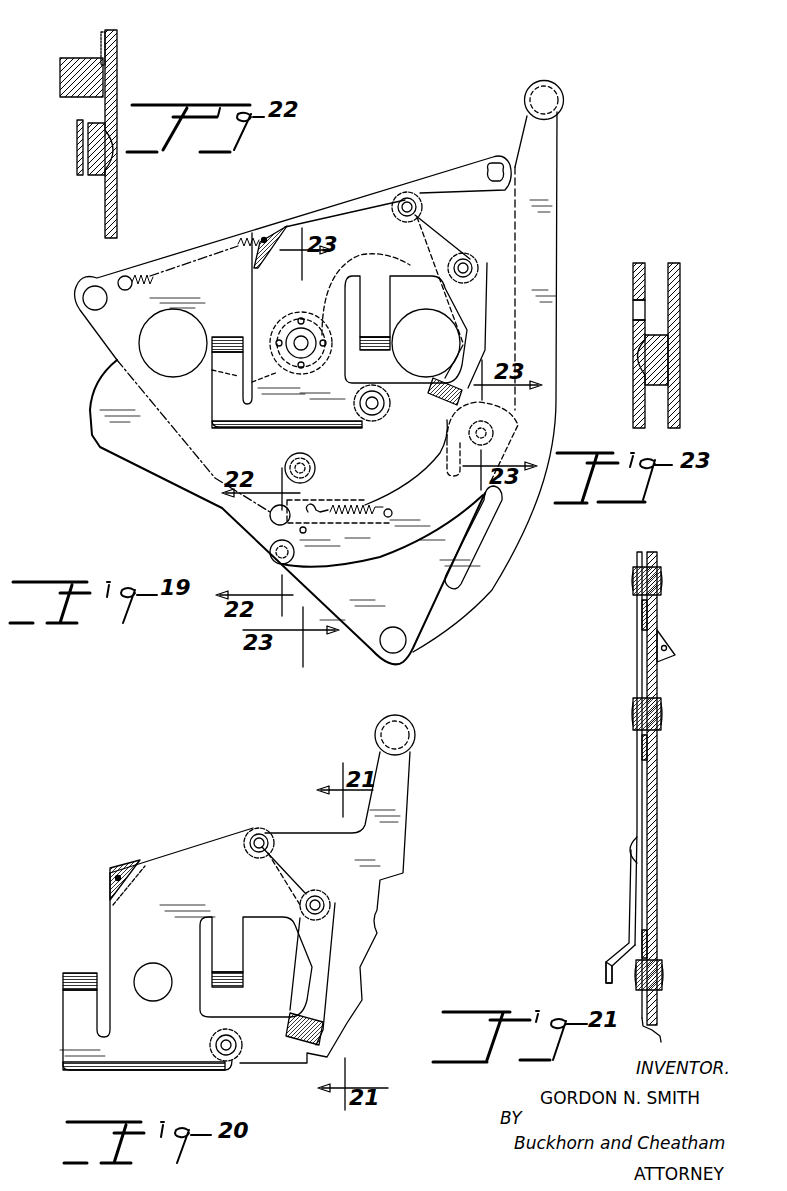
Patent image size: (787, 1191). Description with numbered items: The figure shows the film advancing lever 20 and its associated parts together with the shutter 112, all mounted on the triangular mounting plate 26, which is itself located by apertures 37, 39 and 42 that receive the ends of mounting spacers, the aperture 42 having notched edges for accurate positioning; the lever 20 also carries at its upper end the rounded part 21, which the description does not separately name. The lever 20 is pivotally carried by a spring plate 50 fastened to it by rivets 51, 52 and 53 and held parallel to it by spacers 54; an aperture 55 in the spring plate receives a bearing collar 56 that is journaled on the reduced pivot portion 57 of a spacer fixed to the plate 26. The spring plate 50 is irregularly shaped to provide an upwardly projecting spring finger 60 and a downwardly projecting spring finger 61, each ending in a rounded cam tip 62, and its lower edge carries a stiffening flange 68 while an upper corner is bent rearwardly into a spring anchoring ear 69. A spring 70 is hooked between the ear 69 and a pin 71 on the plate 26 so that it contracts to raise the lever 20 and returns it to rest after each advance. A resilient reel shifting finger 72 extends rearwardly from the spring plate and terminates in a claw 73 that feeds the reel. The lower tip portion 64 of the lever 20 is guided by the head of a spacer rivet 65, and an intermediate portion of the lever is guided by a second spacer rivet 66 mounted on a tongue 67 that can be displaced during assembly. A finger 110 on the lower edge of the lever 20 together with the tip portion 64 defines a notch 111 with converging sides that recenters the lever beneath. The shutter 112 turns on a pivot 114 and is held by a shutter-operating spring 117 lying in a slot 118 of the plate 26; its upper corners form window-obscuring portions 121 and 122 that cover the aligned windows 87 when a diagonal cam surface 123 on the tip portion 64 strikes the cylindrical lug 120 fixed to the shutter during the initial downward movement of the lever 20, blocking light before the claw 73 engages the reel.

In FIG. 19, the film advancing lever 20 is at (540, 252).
In FIG. 20, the film advancing lever 20 is at (400, 795).
In FIG. 21, the film advancing lever 20 is at (658, 815).
In FIG. 23, the film advancing lever 20 is at (678, 298).
In FIG. 19, the roller pin 21 is at (557, 86).
In FIG. 20, the roller pin 21 is at (406, 722).
In FIG. 19, the triangular mounting plate 26 is at (420, 185).
In FIG. 22, the triangular mounting plate 26 is at (120, 58).
In FIG. 23, the triangular mounting plate 26 is at (641, 266).
In FIG. 19, the aperture 37 is at (90, 304).
In FIG. 19, the aperture 39 is at (405, 648).
In FIG. 19, the aperture 42 is at (495, 165).
In FIG. 19, the spring plate 50 is at (350, 217).
In FIG. 20, the spring plate 50 is at (170, 855).
In FIG. 21, the spring plate 50 is at (637, 667).
In FIG. 19, the rivet 51 is at (404, 212).
In FIG. 20, the rivet 51 is at (262, 840).
In FIG. 21, the rivet 51 is at (662, 579).
In FIG. 19, the rivet 52 is at (468, 258).
In FIG. 20, the rivet 52 is at (318, 900).
In FIG. 21, the rivet 52 is at (662, 714).
In FIG. 19, the rivet 53 is at (380, 402).
In FIG. 20, the rivet 53 is at (228, 1052).
In FIG. 21, the rivet 53 is at (663, 976).
In FIG. 21, the spacers 54 is at (645, 556).
In FIG. 20, the aperture 55 is at (156, 974).
In FIG. 19, the bearing collar 56 is at (298, 332).
In FIG. 19, the reduced pivot portion 57 is at (292, 338).
In FIG. 19, the spring finger 60 is at (222, 400).
In FIG. 20, the spring finger 60 is at (73, 1010).
In FIG. 19, the spring finger 61 is at (375, 349).
In FIG. 20, the spring finger 61 is at (235, 966).
In FIG. 20, the rounded cam tip 62 is at (72, 973).
In FIG. 21, the rounded cam tip 62 is at (628, 848).
In FIG. 19, the lower tip portion 64 is at (300, 560).
In FIG. 22, the lower tip portion 64 is at (78, 155).
In FIG. 19, the spacer rivet 65 is at (275, 558).
In FIG. 22, the spacer rivet 65 is at (95, 175).
In FIG. 19, the second spacer rivet 66 is at (498, 432).
In FIG. 23, the second spacer rivet 66 is at (667, 355).
In FIG. 23, the tongue 67 is at (640, 398).
In FIG. 19, the flange 68 is at (255, 430).
In FIG. 20, the flange 68 is at (132, 1068).
In FIG. 21, the flange 68 is at (656, 1032).
In FIG. 19, the spring anchoring ear 69 is at (270, 233).
In FIG. 20, the spring anchoring ear 69 is at (122, 875).
In FIG. 21, the spring anchoring ear 69 is at (672, 651).
In FIG. 19, the spring 70 is at (140, 277).
In FIG. 19, the pin 71 is at (128, 289).
In FIG. 19, the reel shifting finger 72 is at (471, 323).
In FIG. 20, the reel shifting finger 72 is at (316, 980).
In FIG. 21, the reel shifting finger 72 is at (632, 896).
In FIG. 19, the claw 73 is at (452, 396).
In FIG. 20, the claw 73 is at (300, 1040).
In FIG. 21, the claw 73 is at (610, 976).
In FIG. 19, the windows 87 is at (180, 333).
In FIG. 19, the finger 110 is at (462, 574).
In FIG. 19, the notch 111 is at (490, 500).
In FIG. 22, the shutter 112 is at (100, 42).
In FIG. 19, the pivot 114 is at (310, 466).
In FIG. 19, the shutter-operating spring 117 is at (322, 508).
In FIG. 19, the slot 118 is at (366, 507).
In FIG. 19, the cylindrical lug 120 is at (272, 514).
In FIG. 22, the cylindrical lug 120 is at (62, 97).
In FIG. 19, the window-obscuring portion 121 is at (110, 445).
In FIG. 19, the window-obscuring portion 122 is at (367, 383).
In FIG. 19, the cam surface 123 is at (305, 533).